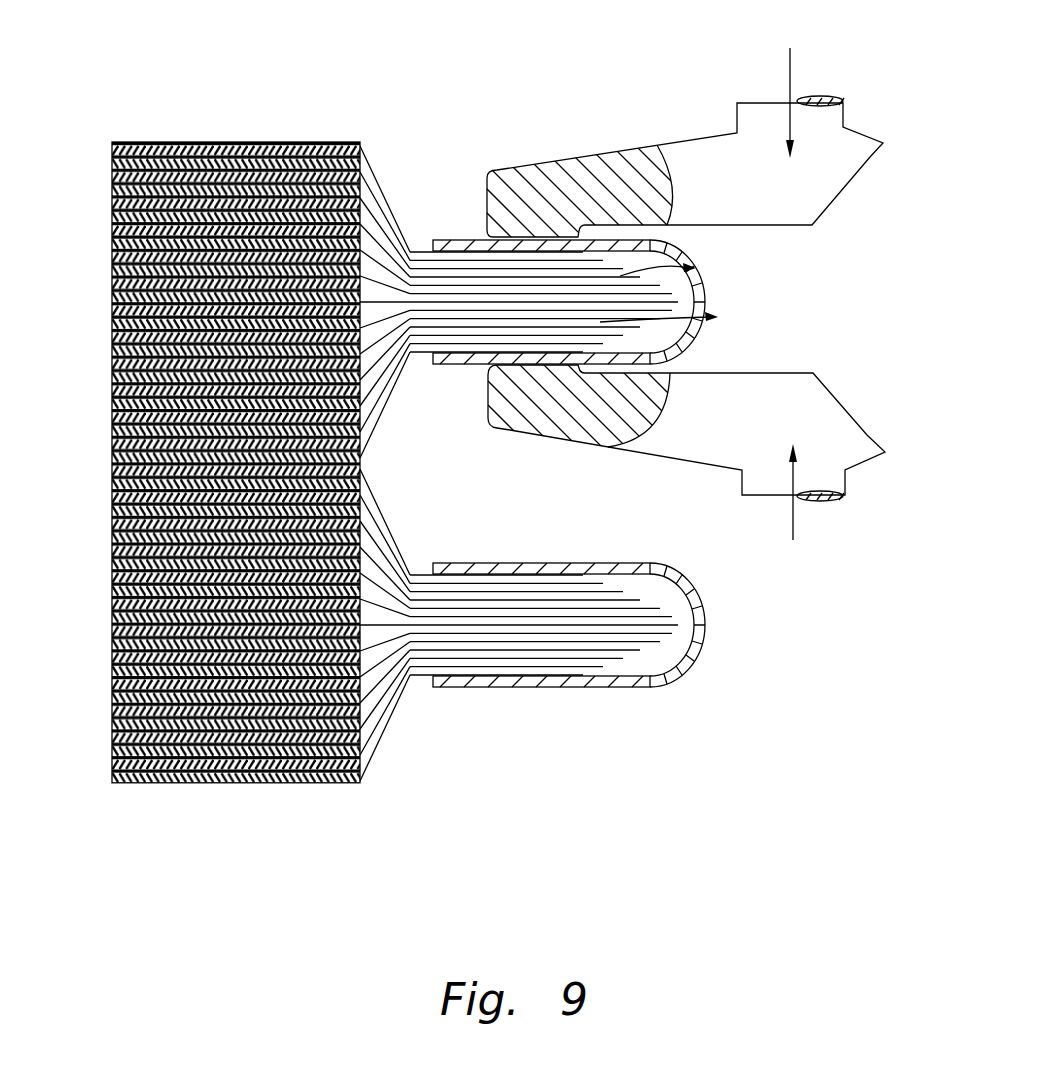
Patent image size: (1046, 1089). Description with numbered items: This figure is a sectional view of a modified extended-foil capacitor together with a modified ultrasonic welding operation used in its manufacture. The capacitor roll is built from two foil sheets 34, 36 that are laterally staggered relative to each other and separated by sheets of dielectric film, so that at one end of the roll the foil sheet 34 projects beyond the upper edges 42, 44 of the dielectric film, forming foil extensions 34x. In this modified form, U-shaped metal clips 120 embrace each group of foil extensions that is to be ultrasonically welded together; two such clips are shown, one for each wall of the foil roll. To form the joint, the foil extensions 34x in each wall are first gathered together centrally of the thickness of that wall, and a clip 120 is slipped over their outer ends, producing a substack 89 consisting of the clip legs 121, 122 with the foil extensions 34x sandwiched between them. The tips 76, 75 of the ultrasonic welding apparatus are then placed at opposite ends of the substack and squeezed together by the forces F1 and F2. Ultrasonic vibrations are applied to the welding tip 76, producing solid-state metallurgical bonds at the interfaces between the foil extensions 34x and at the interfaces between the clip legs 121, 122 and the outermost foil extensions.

The foil sheet 34 is at (116, 600).
The foil sheet 36 is at (116, 666).
The upper edge of dielectric film sheet 42 is at (366, 753).
The upper edge of dielectric film sheet 44 is at (365, 768).
The foil extensions 34x is at (688, 290).
The welding tip 75 is at (595, 443).
The welding tip 76 is at (521, 170).
The substack 89 is at (550, 643).
The U-shaped metal clip 120 is at (694, 621).
The clip leg 121 is at (463, 562).
The clip leg 122 is at (522, 688).
The force F1 is at (789, 88).
The force F2 is at (792, 506).